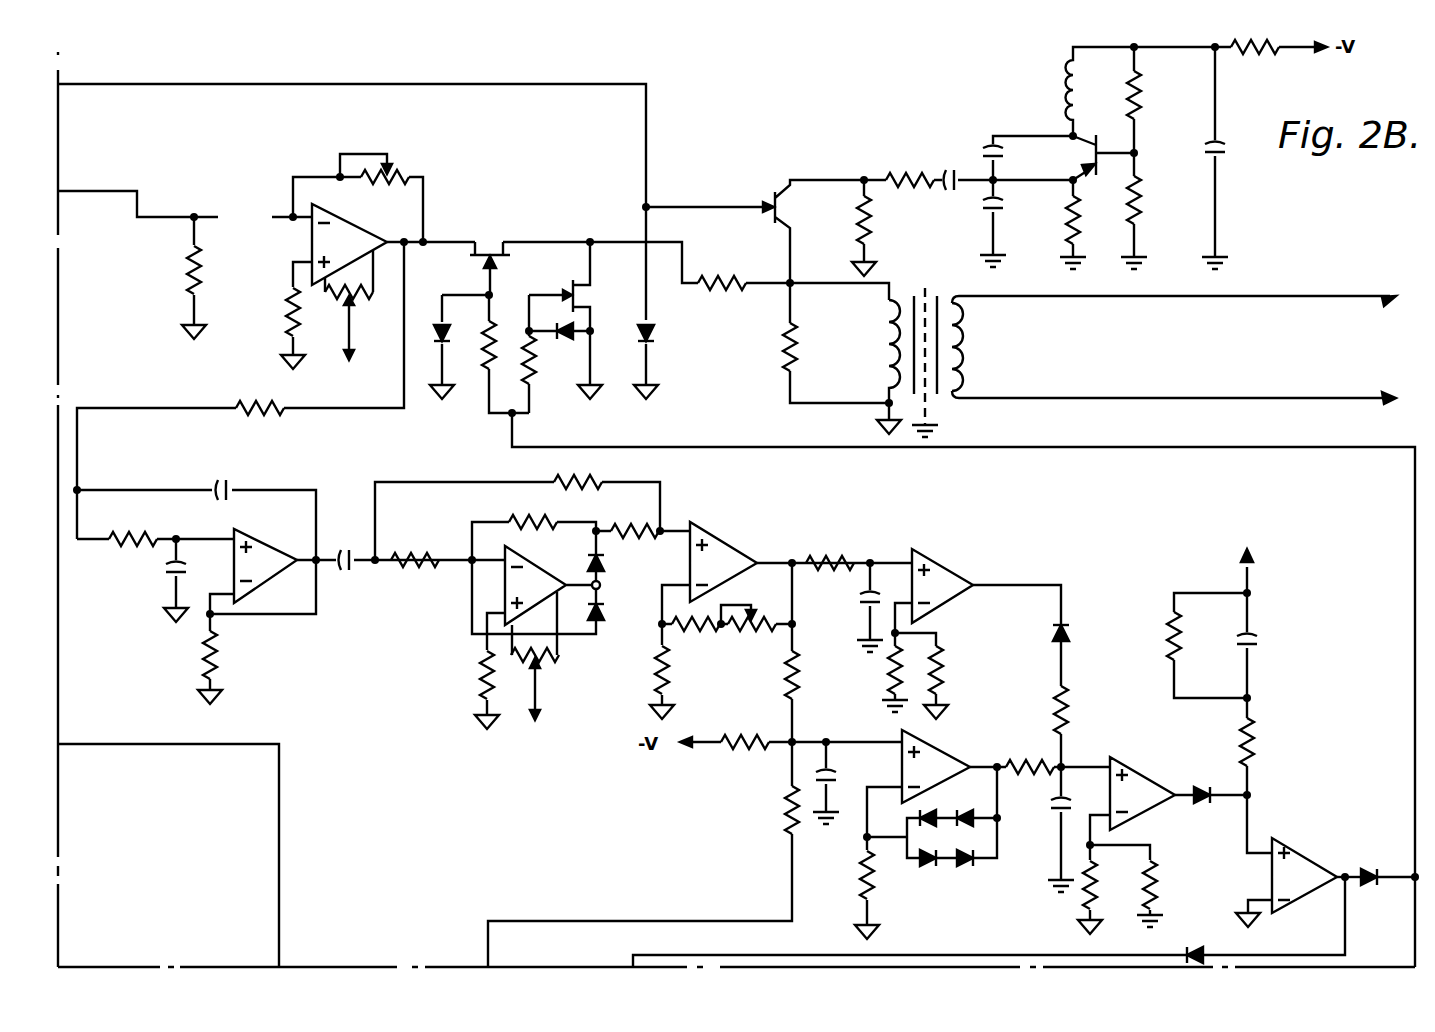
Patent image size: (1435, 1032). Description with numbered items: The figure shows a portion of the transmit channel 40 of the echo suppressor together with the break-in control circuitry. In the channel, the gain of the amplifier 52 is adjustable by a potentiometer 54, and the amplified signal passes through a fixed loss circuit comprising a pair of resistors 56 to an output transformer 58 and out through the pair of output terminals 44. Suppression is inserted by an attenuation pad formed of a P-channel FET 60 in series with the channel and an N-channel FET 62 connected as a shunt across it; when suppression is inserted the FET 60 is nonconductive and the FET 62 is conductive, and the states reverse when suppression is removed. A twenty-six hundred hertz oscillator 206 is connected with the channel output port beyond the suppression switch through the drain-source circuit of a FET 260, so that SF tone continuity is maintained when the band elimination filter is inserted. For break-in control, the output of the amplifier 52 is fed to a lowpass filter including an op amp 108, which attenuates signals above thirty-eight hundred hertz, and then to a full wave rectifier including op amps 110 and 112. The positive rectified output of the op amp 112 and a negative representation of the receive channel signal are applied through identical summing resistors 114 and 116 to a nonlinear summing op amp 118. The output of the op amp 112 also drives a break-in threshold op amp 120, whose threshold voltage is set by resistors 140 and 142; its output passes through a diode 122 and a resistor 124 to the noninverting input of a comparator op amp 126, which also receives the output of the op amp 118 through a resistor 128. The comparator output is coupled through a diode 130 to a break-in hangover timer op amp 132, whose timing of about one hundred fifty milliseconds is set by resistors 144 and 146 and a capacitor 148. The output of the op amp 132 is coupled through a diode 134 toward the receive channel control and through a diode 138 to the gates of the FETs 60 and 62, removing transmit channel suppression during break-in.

The transmit channel 40 is at (744, 132).
The output terminals 44 is at (1388, 302).
The amplifier 52 is at (356, 234).
The potentiometer 54 is at (390, 170).
The resistors 56 is at (735, 292).
The output transformer 58 is at (928, 290).
The P-channel FET 60 is at (491, 240).
The N-channel FET 62 is at (565, 278).
The op amp 108 is at (270, 550).
The op amp 110 is at (546, 578).
The op amp 112 is at (743, 554).
The summing resistor 114 is at (787, 682).
The summing resistor 116 is at (787, 818).
The nonlinear summing op amp 118 is at (942, 762).
The break-in threshold op amp 120 is at (948, 582).
The diode 122 is at (1070, 626).
The resistor 124 is at (1068, 696).
The comparator op amp 126 is at (1144, 774).
The resistor 128 is at (1030, 765).
The diode 130 is at (1199, 801).
The break-in hangover timer op amp 132 is at (1311, 857).
The diode 134 is at (1193, 946).
The diode 138 is at (1373, 869).
The resistor 140 is at (888, 669).
The resistor 142 is at (938, 668).
The resistor 144 is at (1166, 642).
The resistor 146 is at (1262, 740).
The capacitor 148 is at (1266, 640).
The 2600 Hz oscillator 206 is at (1022, 103).
The FET 260 is at (763, 198).